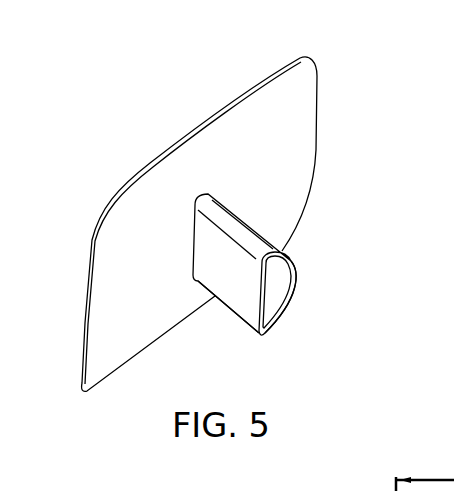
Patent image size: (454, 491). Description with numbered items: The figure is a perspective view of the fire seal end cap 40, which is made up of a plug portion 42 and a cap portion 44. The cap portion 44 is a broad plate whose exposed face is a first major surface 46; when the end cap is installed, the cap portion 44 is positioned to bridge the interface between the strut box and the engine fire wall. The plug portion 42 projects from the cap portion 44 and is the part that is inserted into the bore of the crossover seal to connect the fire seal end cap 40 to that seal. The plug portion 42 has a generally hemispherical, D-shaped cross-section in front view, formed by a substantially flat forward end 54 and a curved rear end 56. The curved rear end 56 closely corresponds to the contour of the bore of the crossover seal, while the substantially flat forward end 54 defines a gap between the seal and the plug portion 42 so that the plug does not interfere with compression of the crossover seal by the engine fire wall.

The fire seal end cap 40 is at (346, 90).
The plug portion 42 is at (287, 250).
The cap portion 44 is at (303, 157).
The first major surface 46 is at (148, 248).
The substantially flat forward end 54 is at (245, 307).
The curved rear end 56 is at (296, 291).